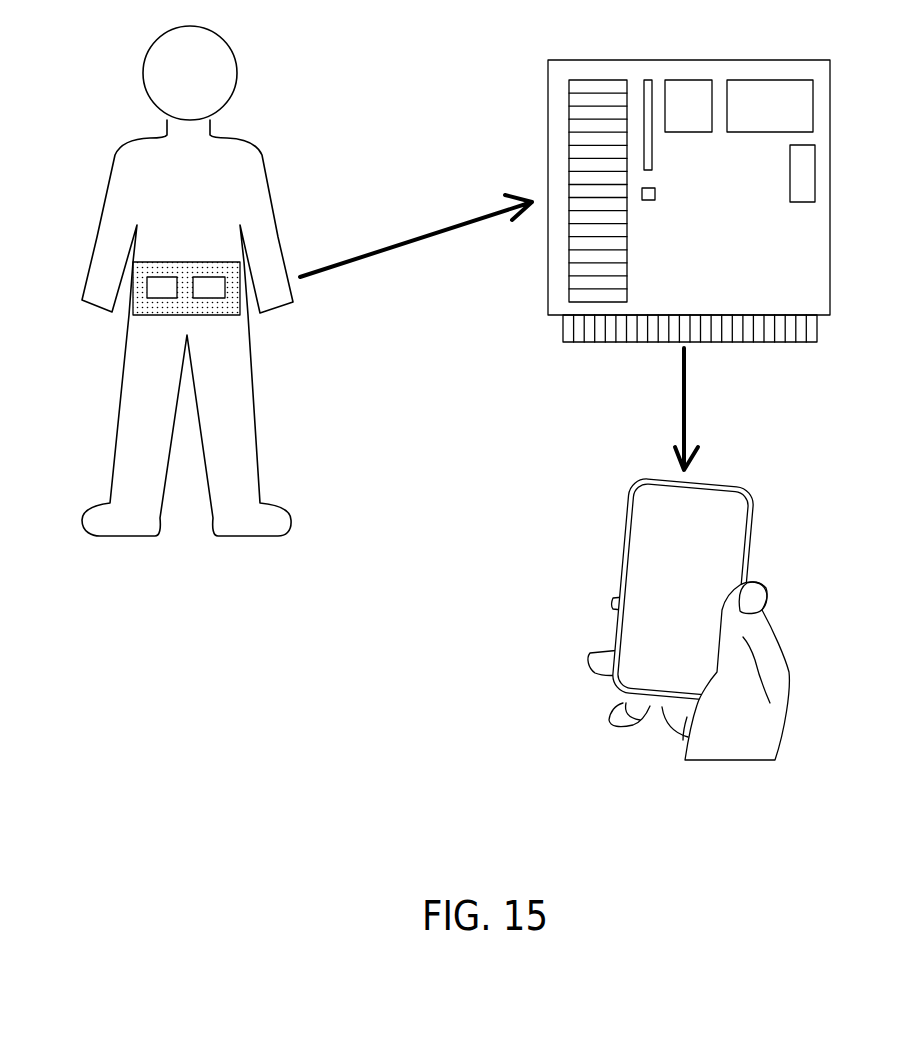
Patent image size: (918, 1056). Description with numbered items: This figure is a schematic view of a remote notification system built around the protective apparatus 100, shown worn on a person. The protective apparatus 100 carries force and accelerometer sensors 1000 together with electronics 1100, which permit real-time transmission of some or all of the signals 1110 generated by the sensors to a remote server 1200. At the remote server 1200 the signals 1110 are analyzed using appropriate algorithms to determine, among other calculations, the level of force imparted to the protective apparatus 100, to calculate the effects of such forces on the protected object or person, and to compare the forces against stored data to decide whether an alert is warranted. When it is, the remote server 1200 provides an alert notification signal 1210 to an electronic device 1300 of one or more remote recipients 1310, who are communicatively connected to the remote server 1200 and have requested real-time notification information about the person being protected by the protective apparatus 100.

The protective apparatus 100 is at (188, 263).
The force and accelerometer sensors 1000 is at (162, 290).
The electronics 1100 is at (212, 285).
The signals 1110 is at (405, 242).
The remote server 1200 is at (745, 72).
The alert notification signal 1210 is at (688, 408).
The electronic device 1300 is at (640, 542).
The remote recipients 1310 is at (763, 728).